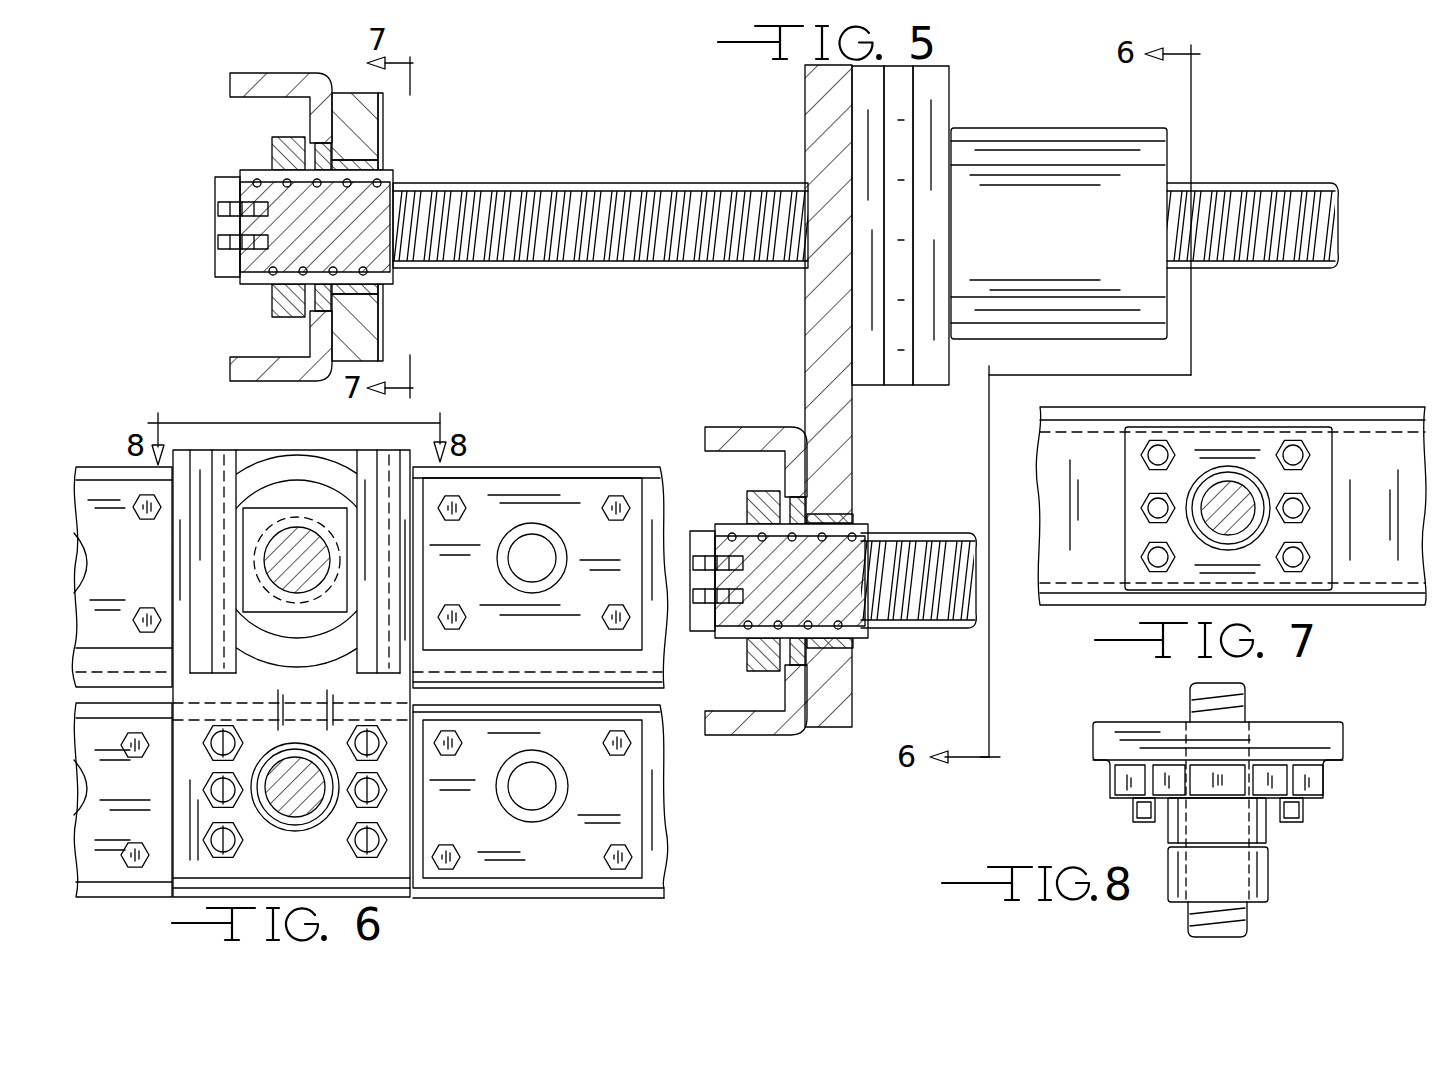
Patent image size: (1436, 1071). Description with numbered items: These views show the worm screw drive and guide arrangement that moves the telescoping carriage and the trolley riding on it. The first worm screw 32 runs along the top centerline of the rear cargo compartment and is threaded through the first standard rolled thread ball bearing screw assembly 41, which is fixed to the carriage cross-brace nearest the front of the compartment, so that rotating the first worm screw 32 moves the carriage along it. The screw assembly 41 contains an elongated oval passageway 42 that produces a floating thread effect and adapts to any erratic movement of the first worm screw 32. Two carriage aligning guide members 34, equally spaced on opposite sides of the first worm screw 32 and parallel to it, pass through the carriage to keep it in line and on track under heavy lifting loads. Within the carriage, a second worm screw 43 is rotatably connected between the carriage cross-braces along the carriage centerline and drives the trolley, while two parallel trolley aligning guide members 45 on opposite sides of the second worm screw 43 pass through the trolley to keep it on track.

In FIG. 5, the first worm screw 32 is at (637, 182).
In FIG. 6, the first worm screw 32 is at (273, 598).
In FIG. 7, the first worm screw 32 is at (1230, 500).
In FIG. 8, the first worm screw 32 is at (1248, 915).
In FIG. 6, the carriage aligning guide members 34 is at (527, 525).
In FIG. 5, the first standard rolled thread ball bearing screw assembly 41 is at (1062, 244).
In FIG. 6, the first standard rolled thread ball bearing screw assembly 41 is at (252, 475).
In FIG. 8, the first standard rolled thread ball bearing screw assembly 41 is at (1270, 832).
In FIG. 6, the elongated oval passageway 42 is at (282, 498).
In FIG. 8, the elongated oval passageway 42 is at (1240, 873).
In FIG. 5, the second worm screw 43 is at (900, 628).
In FIG. 6, the second worm screw 43 is at (300, 822).
In FIG. 6, the trolley aligning guide members 45 is at (520, 818).